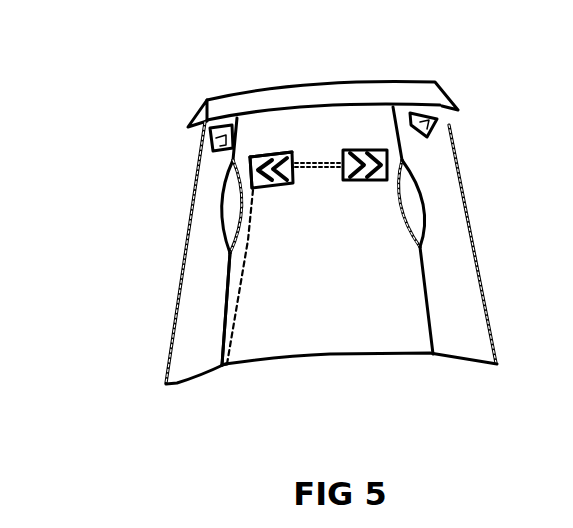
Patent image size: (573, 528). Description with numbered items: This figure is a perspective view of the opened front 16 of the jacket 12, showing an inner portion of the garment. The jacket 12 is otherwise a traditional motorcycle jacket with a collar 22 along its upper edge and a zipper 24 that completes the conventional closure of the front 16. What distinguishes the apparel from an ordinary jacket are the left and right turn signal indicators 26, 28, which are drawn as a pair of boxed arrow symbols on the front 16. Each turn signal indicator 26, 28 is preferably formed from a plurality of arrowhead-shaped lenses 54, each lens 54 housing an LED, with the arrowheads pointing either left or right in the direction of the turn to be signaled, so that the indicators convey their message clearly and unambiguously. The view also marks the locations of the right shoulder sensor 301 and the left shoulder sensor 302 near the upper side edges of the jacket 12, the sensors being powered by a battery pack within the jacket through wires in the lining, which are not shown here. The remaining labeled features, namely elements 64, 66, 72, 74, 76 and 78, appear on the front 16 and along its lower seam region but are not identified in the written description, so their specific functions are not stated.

The jacket 12 is at (170, 143).
The front 16 is at (360, 317).
The collar 22 is at (347, 90).
The zipper 24 is at (166, 384).
The left turn signal indicator 26 is at (368, 181).
The right turn signal indicator 28 is at (274, 187).
The arrowhead-shaped lens 54 is at (257, 157).
The indicator top edge 64 is at (282, 157).
The connecting line 66 is at (321, 170).
The front panel 72 is at (311, 282).
The fold line 74 is at (249, 241).
The seam line 76 is at (222, 281).
The junction 78 is at (226, 366).
The right shoulder sensor 301 is at (191, 157).
The left shoulder sensor 302 is at (438, 110).